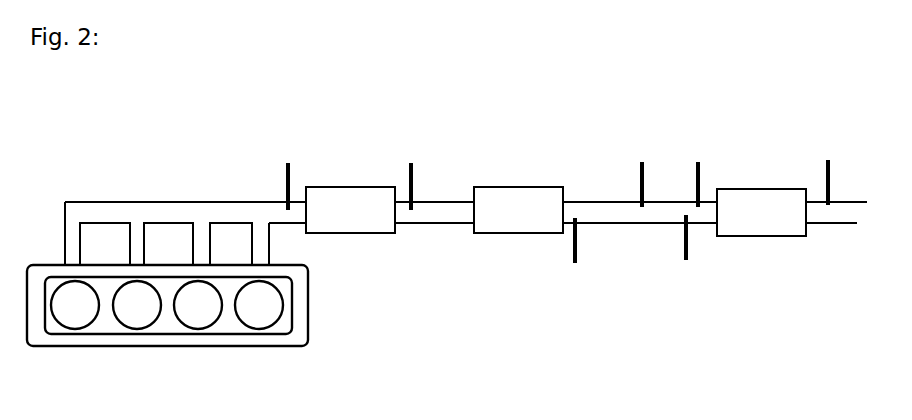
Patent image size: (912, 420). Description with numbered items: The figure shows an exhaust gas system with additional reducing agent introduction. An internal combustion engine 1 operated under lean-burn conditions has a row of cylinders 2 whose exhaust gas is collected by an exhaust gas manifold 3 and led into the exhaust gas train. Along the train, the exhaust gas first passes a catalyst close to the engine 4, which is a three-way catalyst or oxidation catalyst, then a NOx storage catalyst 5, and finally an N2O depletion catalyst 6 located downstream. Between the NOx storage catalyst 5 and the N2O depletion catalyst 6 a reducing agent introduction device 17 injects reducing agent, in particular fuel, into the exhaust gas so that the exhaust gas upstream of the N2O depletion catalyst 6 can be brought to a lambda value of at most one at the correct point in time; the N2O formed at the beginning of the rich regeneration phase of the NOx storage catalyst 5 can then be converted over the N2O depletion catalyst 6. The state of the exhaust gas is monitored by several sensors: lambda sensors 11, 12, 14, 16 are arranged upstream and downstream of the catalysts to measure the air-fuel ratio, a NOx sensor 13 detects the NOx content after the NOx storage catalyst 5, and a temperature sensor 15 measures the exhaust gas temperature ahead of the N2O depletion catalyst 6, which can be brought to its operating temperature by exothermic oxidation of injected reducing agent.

The internal combustion engine 1 is at (298, 337).
The row of cylinders 2 is at (150, 313).
The exhaust gas manifold 3 is at (168, 215).
The catalyst close to the engine 4 is at (344, 218).
The NOx storage catalyst 5 is at (511, 218).
The N2O depletion catalyst 6 is at (755, 219).
The lambda sensor 11 is at (292, 172).
The lambda sensor 12 is at (414, 172).
The NOx sensor 13 is at (572, 257).
The lambda sensor 14 is at (701, 170).
The temperature sensor 15 is at (689, 248).
The lambda sensor 16 is at (831, 168).
The reducing agent introduction device 17 is at (645, 170).